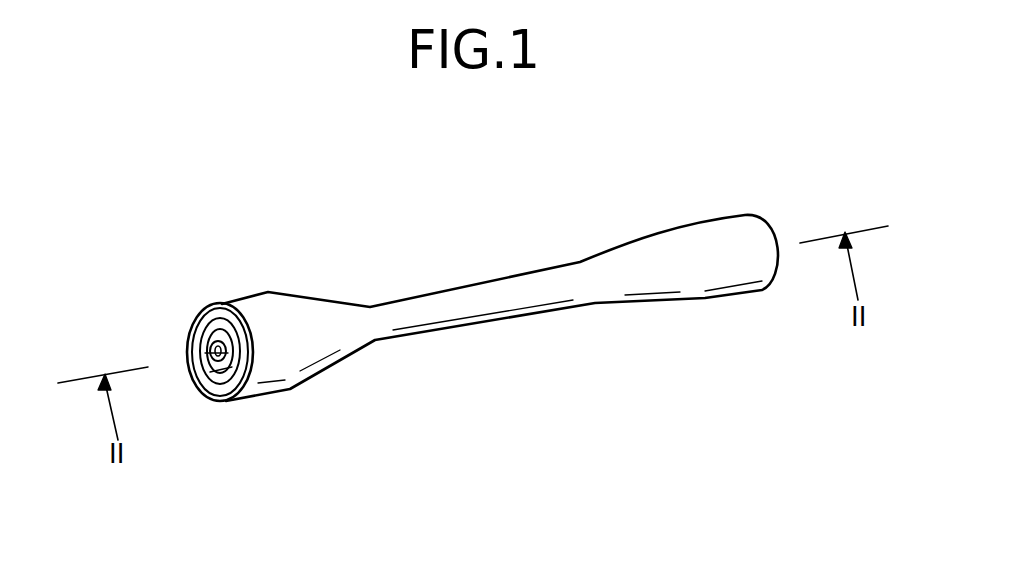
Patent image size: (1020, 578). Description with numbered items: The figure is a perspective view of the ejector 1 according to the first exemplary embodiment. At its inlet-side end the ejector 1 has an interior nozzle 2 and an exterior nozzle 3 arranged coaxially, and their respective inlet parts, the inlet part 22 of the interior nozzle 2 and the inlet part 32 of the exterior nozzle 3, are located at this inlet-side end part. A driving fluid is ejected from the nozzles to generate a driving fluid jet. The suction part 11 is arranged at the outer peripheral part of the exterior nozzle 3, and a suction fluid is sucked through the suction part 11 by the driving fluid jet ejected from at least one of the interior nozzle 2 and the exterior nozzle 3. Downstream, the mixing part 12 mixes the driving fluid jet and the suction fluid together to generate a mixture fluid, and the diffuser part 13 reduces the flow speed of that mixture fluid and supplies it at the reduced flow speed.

The ejector 1 is at (553, 213).
The suction part 11 is at (198, 313).
The inlet part of the interior nozzle 22 is at (197, 343).
The interior nozzle 2 is at (213, 392).
The exterior nozzle 3 is at (221, 386).
The inlet part of the exterior nozzle 32 is at (248, 373).
The mixing part 12 is at (410, 320).
The diffuser part 13 is at (601, 278).